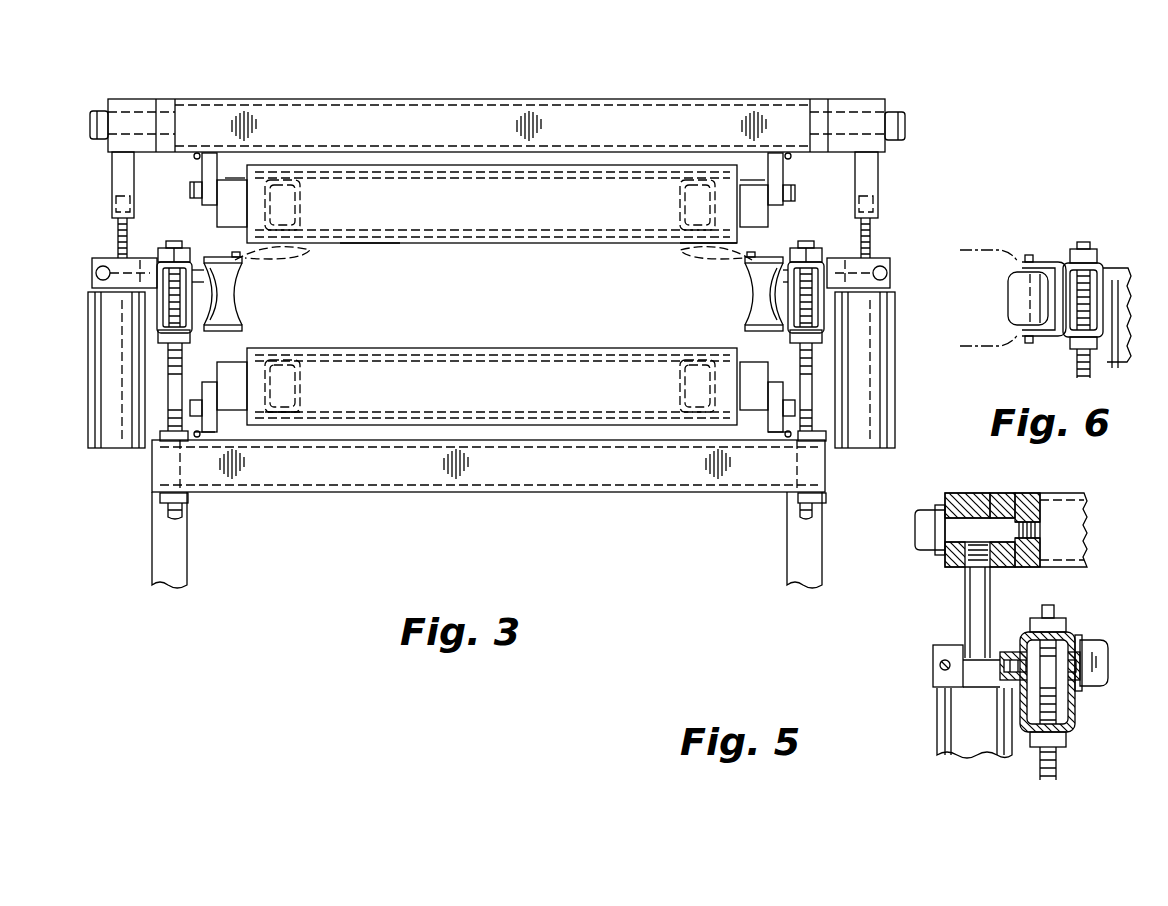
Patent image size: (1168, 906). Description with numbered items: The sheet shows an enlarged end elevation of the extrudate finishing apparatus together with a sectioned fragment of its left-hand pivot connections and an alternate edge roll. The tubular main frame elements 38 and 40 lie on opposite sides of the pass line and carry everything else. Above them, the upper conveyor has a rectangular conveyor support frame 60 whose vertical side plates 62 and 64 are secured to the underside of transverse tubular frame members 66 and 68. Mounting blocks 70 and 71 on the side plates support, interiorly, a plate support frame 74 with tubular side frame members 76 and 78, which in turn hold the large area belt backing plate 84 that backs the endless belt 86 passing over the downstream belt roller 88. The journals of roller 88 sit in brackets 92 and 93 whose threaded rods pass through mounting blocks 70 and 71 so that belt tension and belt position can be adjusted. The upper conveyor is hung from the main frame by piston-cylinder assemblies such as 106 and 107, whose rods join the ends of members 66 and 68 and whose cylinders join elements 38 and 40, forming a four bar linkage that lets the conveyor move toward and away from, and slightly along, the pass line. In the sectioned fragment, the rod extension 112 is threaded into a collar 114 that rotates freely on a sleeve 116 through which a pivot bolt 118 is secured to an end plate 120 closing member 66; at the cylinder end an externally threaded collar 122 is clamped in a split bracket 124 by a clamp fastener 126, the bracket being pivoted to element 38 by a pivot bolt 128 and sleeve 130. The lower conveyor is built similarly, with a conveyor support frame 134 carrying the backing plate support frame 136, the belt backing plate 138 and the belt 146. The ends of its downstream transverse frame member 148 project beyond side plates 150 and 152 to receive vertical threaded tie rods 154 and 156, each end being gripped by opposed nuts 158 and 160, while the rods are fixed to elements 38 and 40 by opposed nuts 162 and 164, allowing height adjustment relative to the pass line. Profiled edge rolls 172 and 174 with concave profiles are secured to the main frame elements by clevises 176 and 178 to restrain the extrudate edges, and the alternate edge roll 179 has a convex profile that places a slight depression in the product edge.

In FIG. 3, the conveyor support frame 60 is at (497, 90).
In FIG. 3, the transverse tubular frame member 66 is at (497, 107).
In FIG. 5, the transverse tubular frame member 66 is at (1040, 509).
In FIG. 3, the transverse tubular frame member 68 is at (396, 99).
In FIG. 3, the vertical side plate 62 is at (202, 168).
In FIG. 3, the vertical side plate 64 is at (783, 170).
In FIG. 3, the mounting block 70 is at (220, 210).
In FIG. 3, the mounting block 71 is at (790, 215).
In FIG. 3, the plate support frame 74 is at (690, 178).
In FIG. 3, the tubular side frame member 76 is at (300, 192).
In FIG. 3, the tubular side frame member 78 is at (680, 192).
In FIG. 3, the belt backing plate 84 is at (492, 174).
In FIG. 3, the endless belt 86 is at (372, 246).
In FIG. 3, the downstream belt roller 88 is at (730, 243).
In FIG. 3, the bracket 92 is at (235, 178).
In FIG. 3, the bracket 93 is at (752, 180).
In FIG. 3, the main frame element 38 is at (157, 278).
In FIG. 5, the main frame element 38 is at (1070, 738).
In FIG. 3, the main frame element 40 is at (217, 376).
In FIG. 6, the main frame element 40 is at (1103, 268).
In FIG. 3, the piston-cylinder assembly 106 is at (90, 316).
In FIG. 5, the piston-cylinder assembly 106 is at (935, 730).
In FIG. 3, the piston-cylinder assembly 107 is at (895, 322).
In FIG. 5, the rod extension 112 is at (965, 598).
In FIG. 5, the collar 114 is at (950, 493).
In FIG. 5, the sleeve 116 is at (995, 505).
In FIG. 5, the pivot bolt 118 is at (920, 548).
In FIG. 5, the end plate 120 is at (1040, 508).
In FIG. 5, the externally threaded collar 122 is at (1000, 670).
In FIG. 5, the split bracket 124 is at (939, 649).
In FIG. 5, the clamp fastener 126 is at (938, 660).
In FIG. 5, the pivot bolt 128 is at (1092, 640).
In FIG. 5, the sleeve 130 is at (1075, 710).
In FIG. 3, the conveyor support frame 134 is at (488, 514).
In FIG. 3, the backing plate support frame 136 is at (278, 420).
In FIG. 3, the belt backing plate 138 is at (492, 371).
In FIG. 3, the belt 146 is at (370, 348).
In FIG. 3, the downstream transverse frame member 148 is at (378, 492).
In FIG. 3, the side plate 150 is at (207, 432).
In FIG. 3, the side plate 152 is at (775, 432).
In FIG. 3, the threaded tie rod 154 is at (170, 513).
In FIG. 3, the threaded tie rod 156 is at (812, 515).
In FIG. 3, the nut 158 is at (168, 442).
In FIG. 3, the nut 160 is at (160, 499).
In FIG. 3, the nut 162 is at (212, 236).
In FIG. 3, the nut 164 is at (488, 324).
In FIG. 3, the profiled edge roll 172 is at (243, 302).
In FIG. 3, the profiled edge roll 174 is at (745, 302).
In FIG. 3, the clevis 176 is at (215, 358).
In FIG. 3, the clevis 178 is at (748, 335).
In FIG. 6, the clevis 178 is at (1052, 262).
In FIG. 6, the edge roll 179 is at (1008, 302).